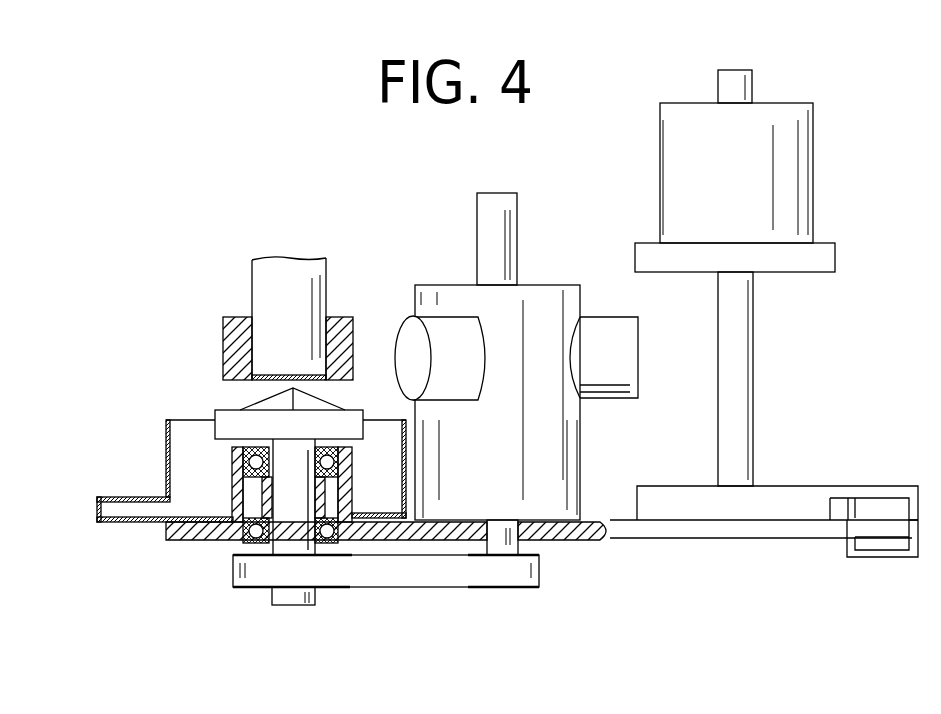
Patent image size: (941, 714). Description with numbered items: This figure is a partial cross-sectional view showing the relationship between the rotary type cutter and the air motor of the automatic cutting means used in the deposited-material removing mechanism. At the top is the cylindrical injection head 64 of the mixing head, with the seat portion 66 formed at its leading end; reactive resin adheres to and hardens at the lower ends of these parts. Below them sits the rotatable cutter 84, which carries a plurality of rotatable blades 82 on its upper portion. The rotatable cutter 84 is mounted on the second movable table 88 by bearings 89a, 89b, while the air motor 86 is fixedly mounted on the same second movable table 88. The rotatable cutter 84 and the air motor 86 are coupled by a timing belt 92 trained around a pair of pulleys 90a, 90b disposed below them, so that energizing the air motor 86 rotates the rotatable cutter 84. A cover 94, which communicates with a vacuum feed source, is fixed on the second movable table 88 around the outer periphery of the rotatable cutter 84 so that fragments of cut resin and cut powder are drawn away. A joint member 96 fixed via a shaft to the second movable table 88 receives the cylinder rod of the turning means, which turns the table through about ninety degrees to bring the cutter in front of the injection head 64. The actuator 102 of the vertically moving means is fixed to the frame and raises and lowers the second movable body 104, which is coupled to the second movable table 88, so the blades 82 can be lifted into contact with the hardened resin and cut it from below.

The injection head 64 is at (277, 272).
The seat portion 66 is at (238, 323).
The rotatable blades 82 is at (265, 405).
The rotatable cutter 84 is at (210, 537).
The air motor 86 is at (542, 303).
The second movable table 88 is at (633, 545).
The bearing 89a is at (236, 461).
The bearing 89b is at (288, 495).
The pulley 90a is at (260, 590).
The pulley 90b is at (520, 590).
The timing belt 92 is at (413, 580).
The cover 94 is at (166, 440).
The joint member 96 is at (884, 548).
The actuator 102 is at (760, 177).
The second movable body 104 is at (800, 490).